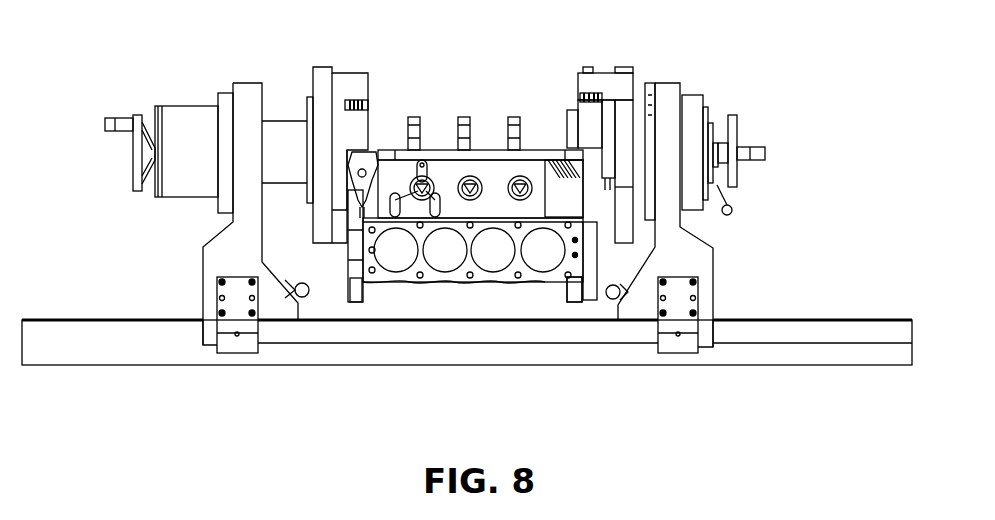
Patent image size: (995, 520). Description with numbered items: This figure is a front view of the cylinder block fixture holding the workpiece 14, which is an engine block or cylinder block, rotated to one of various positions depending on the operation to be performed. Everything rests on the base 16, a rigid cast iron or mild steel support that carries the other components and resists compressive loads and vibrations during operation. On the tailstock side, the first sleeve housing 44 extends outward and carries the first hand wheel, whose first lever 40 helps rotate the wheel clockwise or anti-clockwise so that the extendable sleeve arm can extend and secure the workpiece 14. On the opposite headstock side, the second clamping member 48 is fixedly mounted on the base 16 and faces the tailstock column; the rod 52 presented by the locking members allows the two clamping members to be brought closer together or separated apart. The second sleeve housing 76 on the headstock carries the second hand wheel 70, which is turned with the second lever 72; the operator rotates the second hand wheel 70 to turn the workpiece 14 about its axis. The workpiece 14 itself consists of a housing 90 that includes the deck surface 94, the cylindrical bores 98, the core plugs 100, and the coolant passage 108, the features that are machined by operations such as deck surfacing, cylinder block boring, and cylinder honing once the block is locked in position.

The workpiece 14 is at (433, 85).
The base 16 is at (793, 342).
The first lever 40 is at (112, 118).
The first sleeve housing 44 is at (192, 115).
The second clamping member 48 is at (673, 262).
The rod 52 is at (297, 333).
The second hand wheel 70 is at (733, 113).
The second lever 72 is at (760, 147).
The second sleeve housing 76 is at (707, 100).
The housing 90 is at (557, 178).
The deck surface 94 is at (372, 280).
The cylindrical bores 98 is at (538, 255).
The core plugs 100 is at (467, 200).
The coolant passage 108 is at (570, 265).